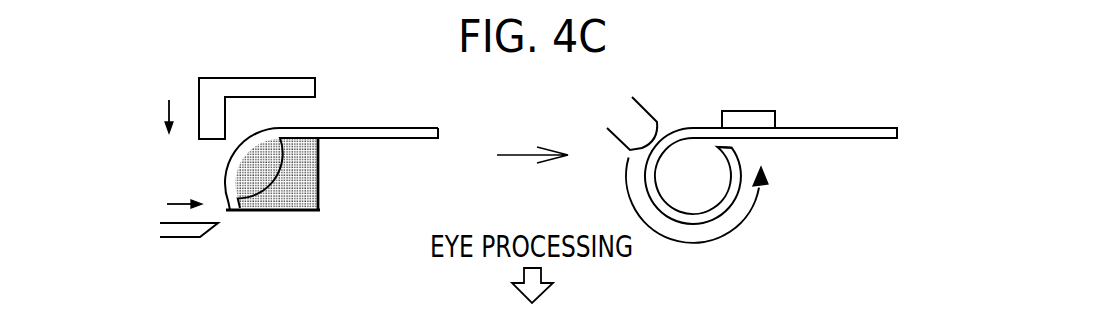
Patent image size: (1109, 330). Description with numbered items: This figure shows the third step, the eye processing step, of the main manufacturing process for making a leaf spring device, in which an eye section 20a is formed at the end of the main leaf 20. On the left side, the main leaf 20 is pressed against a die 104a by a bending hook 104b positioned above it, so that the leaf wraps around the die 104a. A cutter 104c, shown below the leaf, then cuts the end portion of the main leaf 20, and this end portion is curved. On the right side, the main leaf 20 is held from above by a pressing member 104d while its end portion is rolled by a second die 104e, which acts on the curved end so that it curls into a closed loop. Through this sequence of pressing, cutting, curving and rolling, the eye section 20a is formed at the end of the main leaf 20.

The main leaf 20 is at (408, 128).
The eye section 20a is at (738, 148).
The die 104a is at (317, 180).
The bending hook 104b is at (293, 78).
The cutter 104c is at (183, 237).
The pressing member 104d is at (767, 110).
The die 104e is at (643, 107).